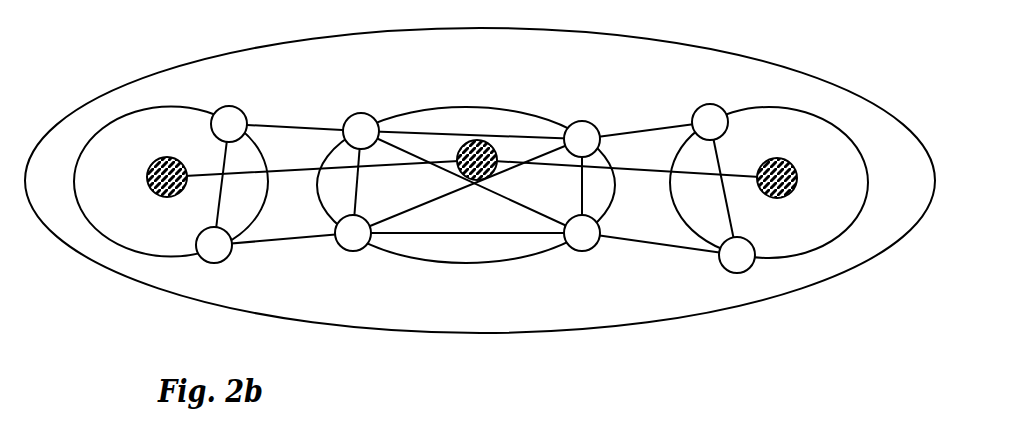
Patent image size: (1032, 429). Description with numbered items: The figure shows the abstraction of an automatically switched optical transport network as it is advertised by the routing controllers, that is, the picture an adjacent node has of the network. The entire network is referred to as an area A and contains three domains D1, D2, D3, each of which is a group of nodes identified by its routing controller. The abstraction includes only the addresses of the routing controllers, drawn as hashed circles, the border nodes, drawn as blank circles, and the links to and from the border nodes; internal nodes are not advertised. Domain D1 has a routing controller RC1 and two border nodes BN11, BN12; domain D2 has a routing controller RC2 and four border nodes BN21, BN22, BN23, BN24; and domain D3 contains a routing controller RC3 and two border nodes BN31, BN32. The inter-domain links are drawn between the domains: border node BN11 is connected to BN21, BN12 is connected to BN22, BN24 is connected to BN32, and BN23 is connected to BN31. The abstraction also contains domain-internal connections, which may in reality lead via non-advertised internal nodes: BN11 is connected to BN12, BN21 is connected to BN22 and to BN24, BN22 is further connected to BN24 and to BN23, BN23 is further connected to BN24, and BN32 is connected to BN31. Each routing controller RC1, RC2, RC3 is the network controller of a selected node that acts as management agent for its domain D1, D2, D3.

The area A is at (480, 204).
The domain D1 is at (171, 201).
The domain D2 is at (466, 207).
The domain D3 is at (769, 170).
The border node BN11 is at (221, 111).
The border node BN12 is at (190, 239).
The border node BN21 is at (340, 118).
The border node BN22 is at (344, 247).
The border node BN23 is at (575, 251).
The border node BN24 is at (573, 122).
The border node BN31 is at (711, 267).
The border node BN32 is at (685, 109).
The routing controller RC1 is at (125, 120).
The routing controller RC2 is at (439, 121).
The routing controller RC3 is at (805, 194).